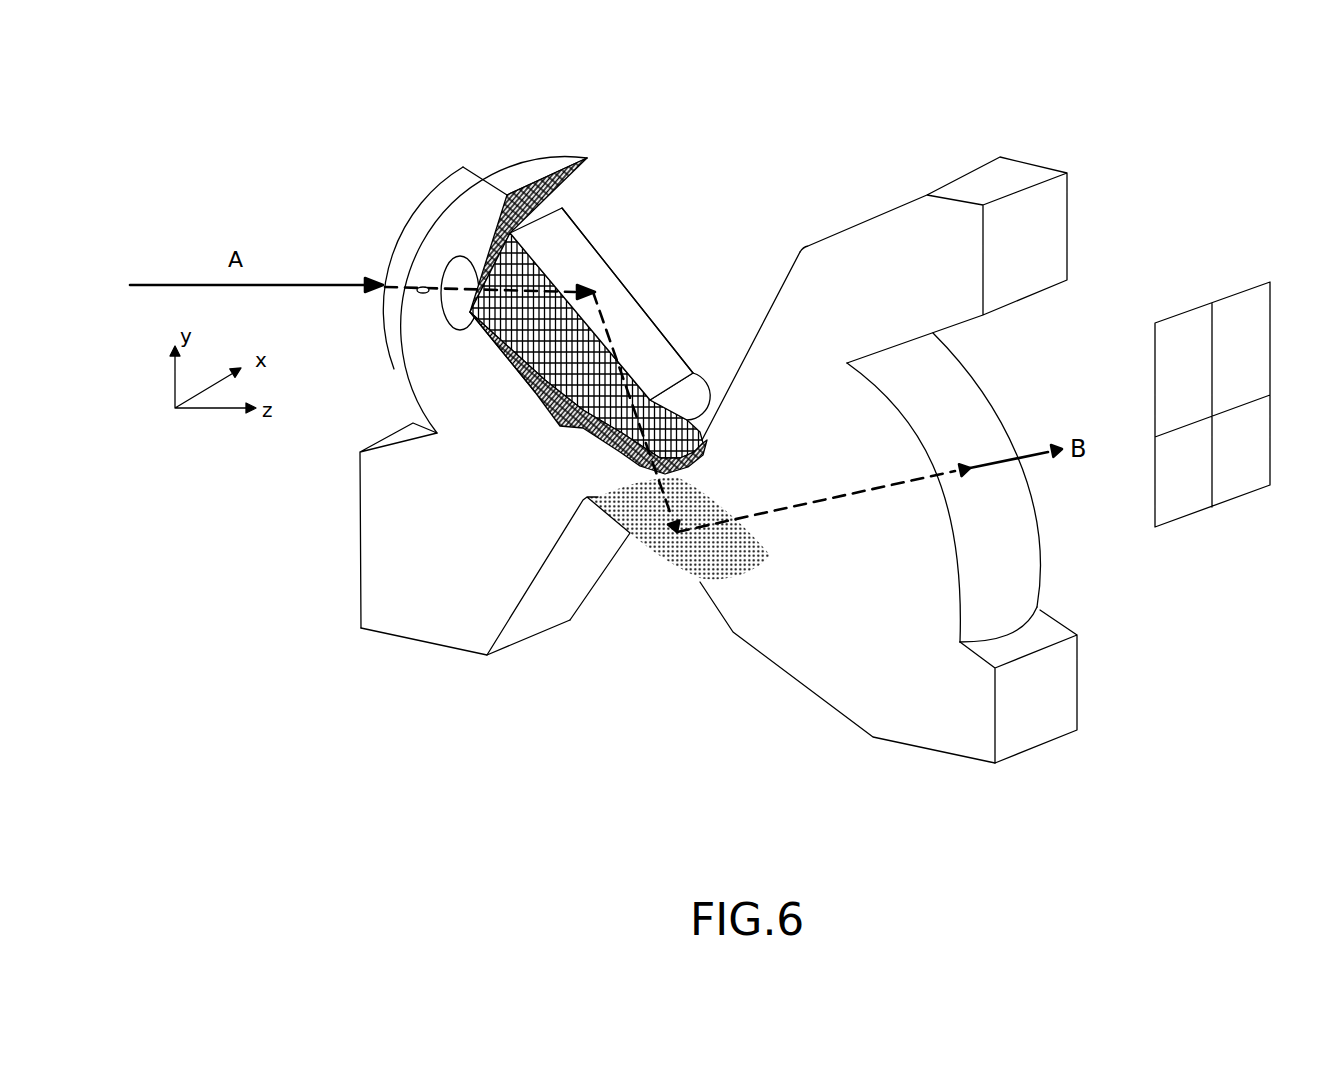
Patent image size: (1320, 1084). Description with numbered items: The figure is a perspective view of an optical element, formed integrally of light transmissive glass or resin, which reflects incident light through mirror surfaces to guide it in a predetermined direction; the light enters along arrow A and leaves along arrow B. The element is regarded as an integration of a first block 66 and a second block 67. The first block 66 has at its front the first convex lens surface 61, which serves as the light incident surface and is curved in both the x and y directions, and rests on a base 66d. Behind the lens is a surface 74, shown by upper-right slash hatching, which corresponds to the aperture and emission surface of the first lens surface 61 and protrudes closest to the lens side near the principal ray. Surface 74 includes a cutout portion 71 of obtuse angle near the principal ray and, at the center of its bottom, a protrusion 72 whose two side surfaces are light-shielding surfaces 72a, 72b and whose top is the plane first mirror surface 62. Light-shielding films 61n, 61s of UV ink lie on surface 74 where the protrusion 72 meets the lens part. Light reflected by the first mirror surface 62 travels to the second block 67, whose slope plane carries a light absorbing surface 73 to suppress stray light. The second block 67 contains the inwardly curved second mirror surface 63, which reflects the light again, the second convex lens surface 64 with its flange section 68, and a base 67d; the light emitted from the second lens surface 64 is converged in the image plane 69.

The first convex lens surface 61 is at (397, 225).
The light-shielding film 61n is at (540, 190).
The light-shielding film 61s is at (497, 347).
The first mirror surface 62 is at (563, 245).
The second mirror surface 63 is at (673, 562).
The second convex lens surface 64 is at (963, 403).
The first block 66 is at (623, 133).
The base 66d is at (453, 617).
The second block 67 is at (905, 108).
The base 67d is at (920, 727).
The flange section 68 is at (1057, 697).
The image plane 69 is at (1240, 302).
The cutout portion 71 is at (463, 260).
The protrusion 72 is at (650, 257).
The light-shielding surface 72a is at (537, 387).
The light-shielding surface 72b is at (647, 310).
The light absorbing surface 73 is at (783, 277).
The surface 74 is at (587, 180).